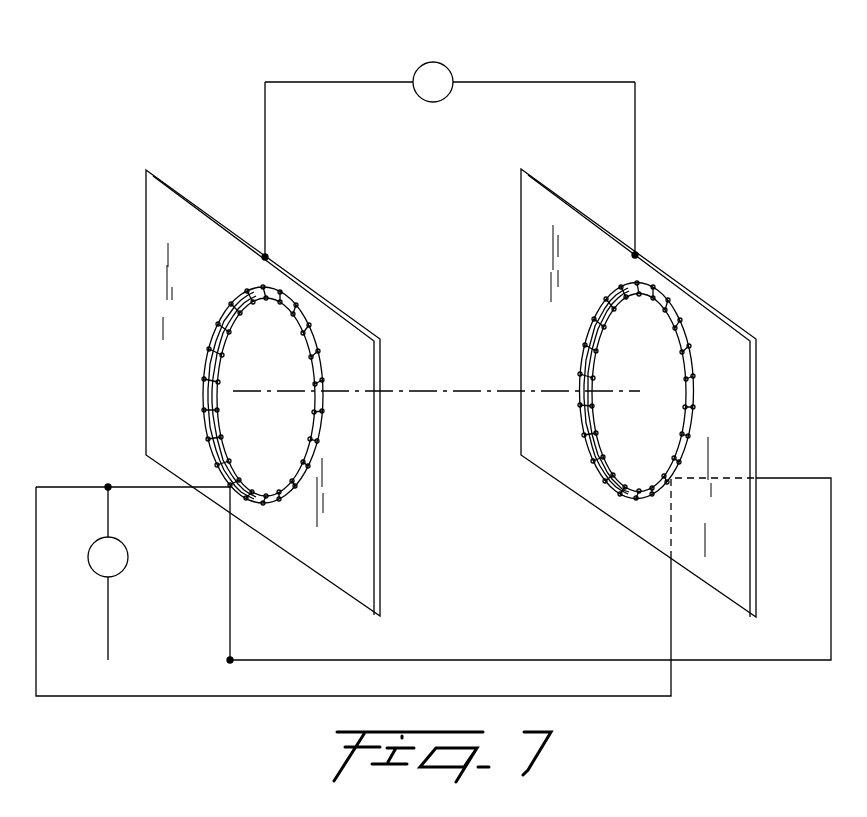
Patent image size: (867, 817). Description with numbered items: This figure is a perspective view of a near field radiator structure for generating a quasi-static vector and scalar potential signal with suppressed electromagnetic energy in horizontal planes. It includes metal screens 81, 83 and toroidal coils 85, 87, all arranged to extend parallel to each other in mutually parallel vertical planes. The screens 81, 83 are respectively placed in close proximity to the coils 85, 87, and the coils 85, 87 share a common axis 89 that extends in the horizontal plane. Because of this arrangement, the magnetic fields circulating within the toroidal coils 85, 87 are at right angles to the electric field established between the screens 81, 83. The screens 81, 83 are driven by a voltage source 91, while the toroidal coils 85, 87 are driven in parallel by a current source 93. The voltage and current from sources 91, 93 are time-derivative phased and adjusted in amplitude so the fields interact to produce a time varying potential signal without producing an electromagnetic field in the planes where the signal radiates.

The metal screen 81 is at (145, 238).
The metal screen 83 is at (738, 388).
The toroidal coil 85 is at (307, 316).
The toroidal coil 87 is at (583, 346).
The common axis 89 is at (503, 393).
The voltage source 91 is at (441, 64).
The current source 93 is at (128, 553).